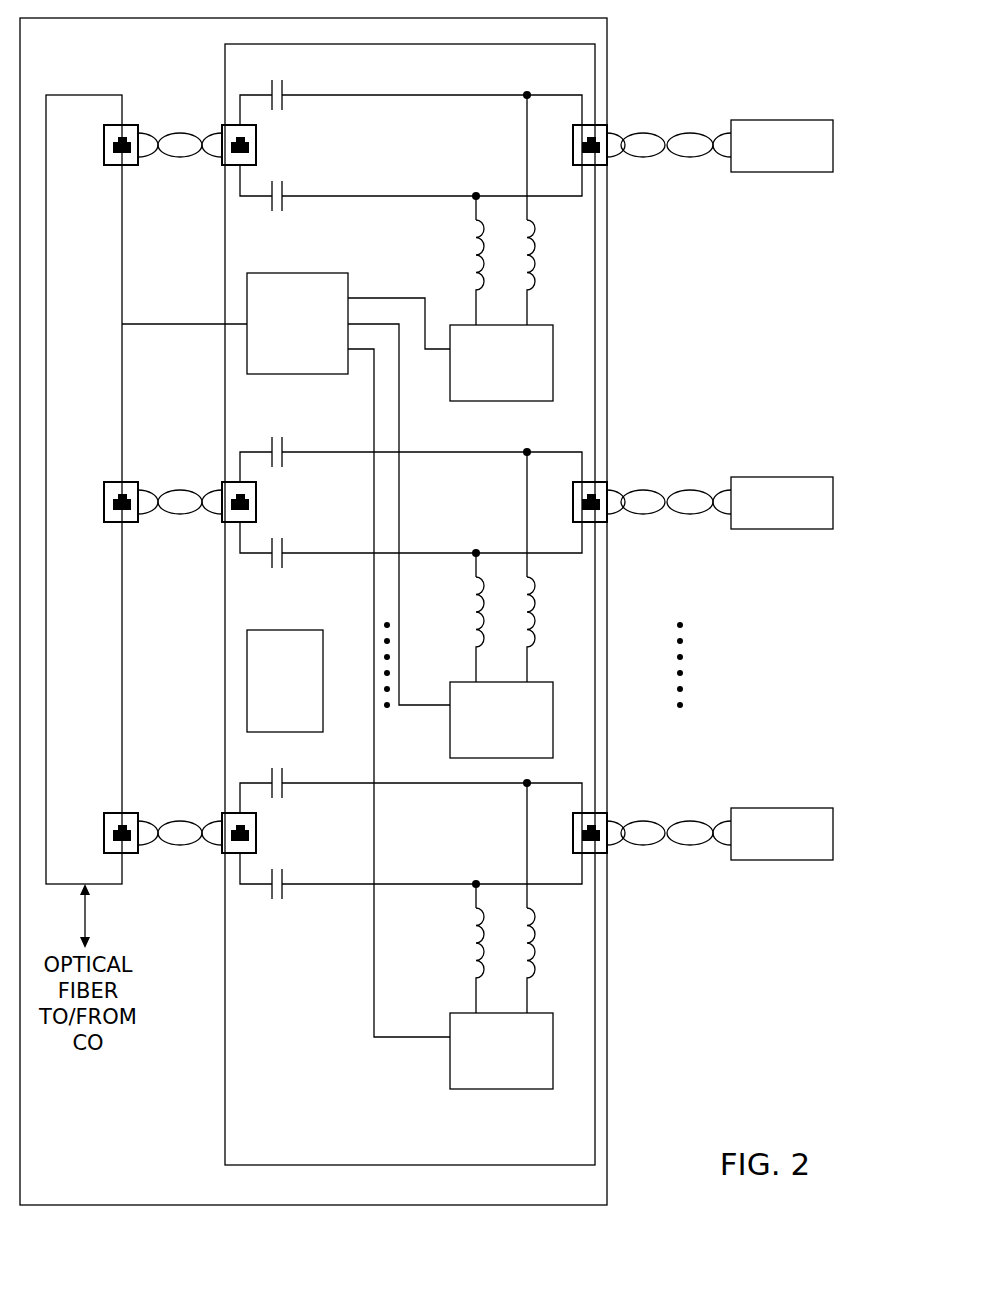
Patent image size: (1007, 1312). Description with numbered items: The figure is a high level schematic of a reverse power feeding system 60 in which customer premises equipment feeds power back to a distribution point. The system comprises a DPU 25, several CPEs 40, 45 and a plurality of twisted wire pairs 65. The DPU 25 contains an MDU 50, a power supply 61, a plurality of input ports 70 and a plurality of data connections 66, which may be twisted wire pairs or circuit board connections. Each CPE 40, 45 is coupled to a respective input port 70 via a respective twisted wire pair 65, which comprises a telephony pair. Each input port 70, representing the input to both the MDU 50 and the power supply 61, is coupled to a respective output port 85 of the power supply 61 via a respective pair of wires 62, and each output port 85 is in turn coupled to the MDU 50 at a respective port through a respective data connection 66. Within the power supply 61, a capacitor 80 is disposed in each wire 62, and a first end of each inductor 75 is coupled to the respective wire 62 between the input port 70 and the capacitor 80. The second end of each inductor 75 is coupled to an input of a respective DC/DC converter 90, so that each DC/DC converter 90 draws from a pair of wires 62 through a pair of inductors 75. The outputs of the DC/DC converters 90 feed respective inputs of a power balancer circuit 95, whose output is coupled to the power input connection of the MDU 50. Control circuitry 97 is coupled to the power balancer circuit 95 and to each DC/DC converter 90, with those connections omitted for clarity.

The DPU 25 is at (607, 259).
The CPE 40 is at (833, 502).
The CPE 45 is at (833, 145).
The MDU 50 is at (122, 246).
The reverse power feeding system 60 is at (691, 66).
The power supply 61 is at (225, 197).
The wires 62 is at (478, 95).
The twisted wire pairs 65 is at (650, 158).
The data connections 66 is at (182, 132).
The input ports 70 is at (573, 145).
The inductors 75 is at (469, 238).
The capacitors 80 is at (277, 111).
The output ports 85 is at (257, 133).
The DC/DC converters 90 is at (553, 350).
The power balancer circuit 95 is at (298, 273).
The control circuitry 97 is at (323, 655).